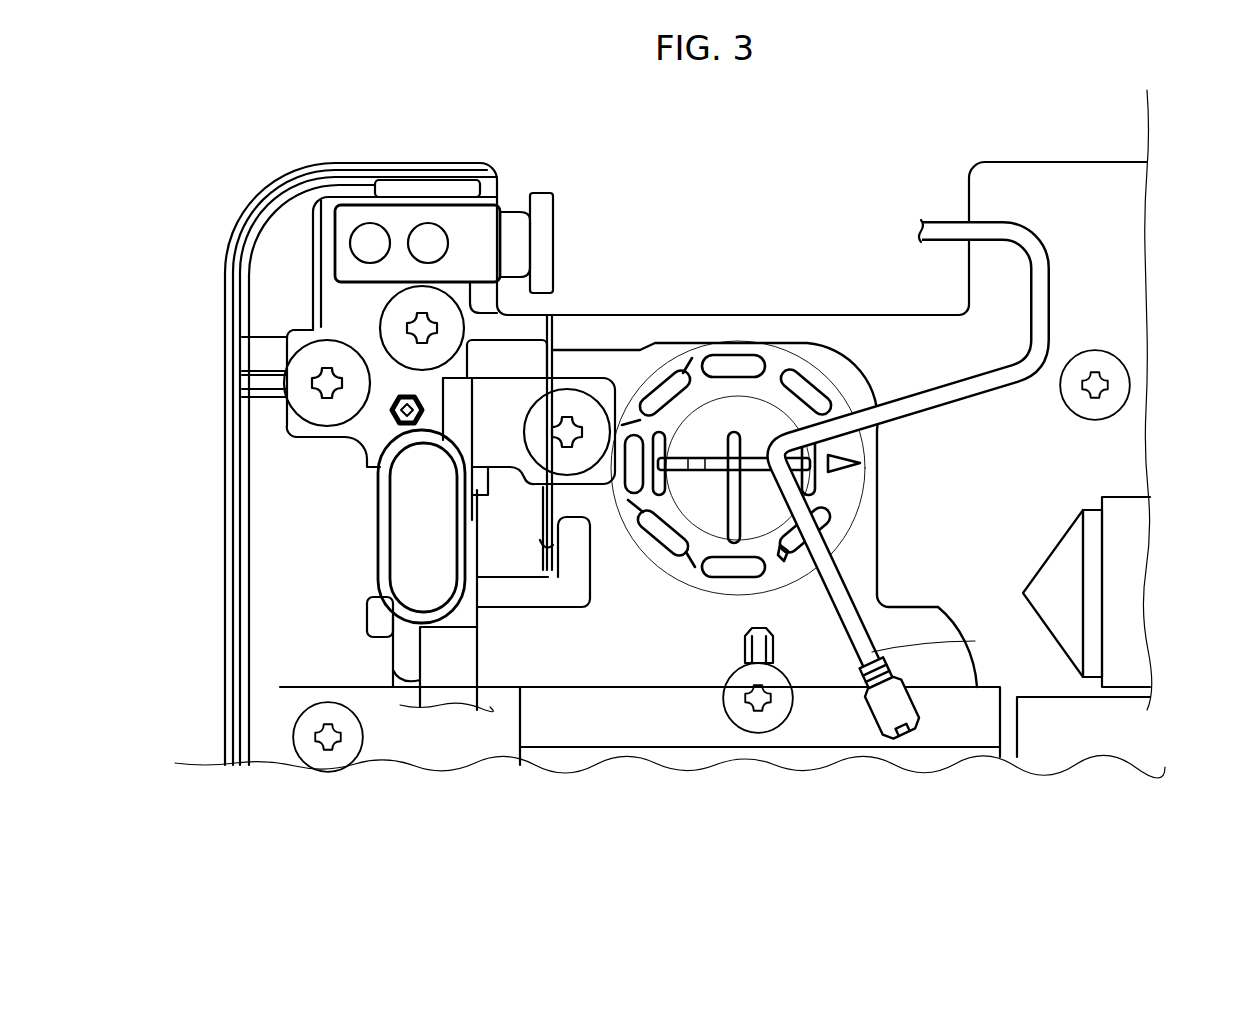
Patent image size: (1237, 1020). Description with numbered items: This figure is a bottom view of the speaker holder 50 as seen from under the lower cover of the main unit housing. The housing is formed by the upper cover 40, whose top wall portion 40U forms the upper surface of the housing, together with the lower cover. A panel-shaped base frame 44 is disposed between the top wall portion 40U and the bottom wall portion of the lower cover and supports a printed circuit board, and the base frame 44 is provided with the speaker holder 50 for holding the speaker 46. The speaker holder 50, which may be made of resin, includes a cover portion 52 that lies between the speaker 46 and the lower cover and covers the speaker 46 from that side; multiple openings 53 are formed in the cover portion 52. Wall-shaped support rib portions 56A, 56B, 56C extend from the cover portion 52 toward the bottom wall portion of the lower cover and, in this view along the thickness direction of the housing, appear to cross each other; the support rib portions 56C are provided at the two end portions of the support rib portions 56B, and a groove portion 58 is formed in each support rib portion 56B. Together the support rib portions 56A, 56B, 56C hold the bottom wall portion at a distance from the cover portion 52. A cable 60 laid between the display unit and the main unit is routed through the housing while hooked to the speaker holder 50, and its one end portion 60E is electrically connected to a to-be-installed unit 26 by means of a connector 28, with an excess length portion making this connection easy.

The to-be-installed unit 26 is at (848, 730).
The connector 28 is at (902, 700).
The upper cover 40 is at (226, 232).
The top wall portion 40U is at (1107, 453).
The base frame 44 is at (594, 676).
The speaker 46 is at (850, 518).
The speaker holder 50 is at (824, 344).
The cover portion 52 is at (722, 392).
The openings 53 is at (860, 395).
The support rib portion 56A is at (678, 570).
The support rib portion 56B is at (717, 458).
The support rib portion 56C is at (622, 502).
The groove portion 58 is at (700, 471).
The cable 60 is at (944, 409).
The one end portion 60E is at (972, 640).